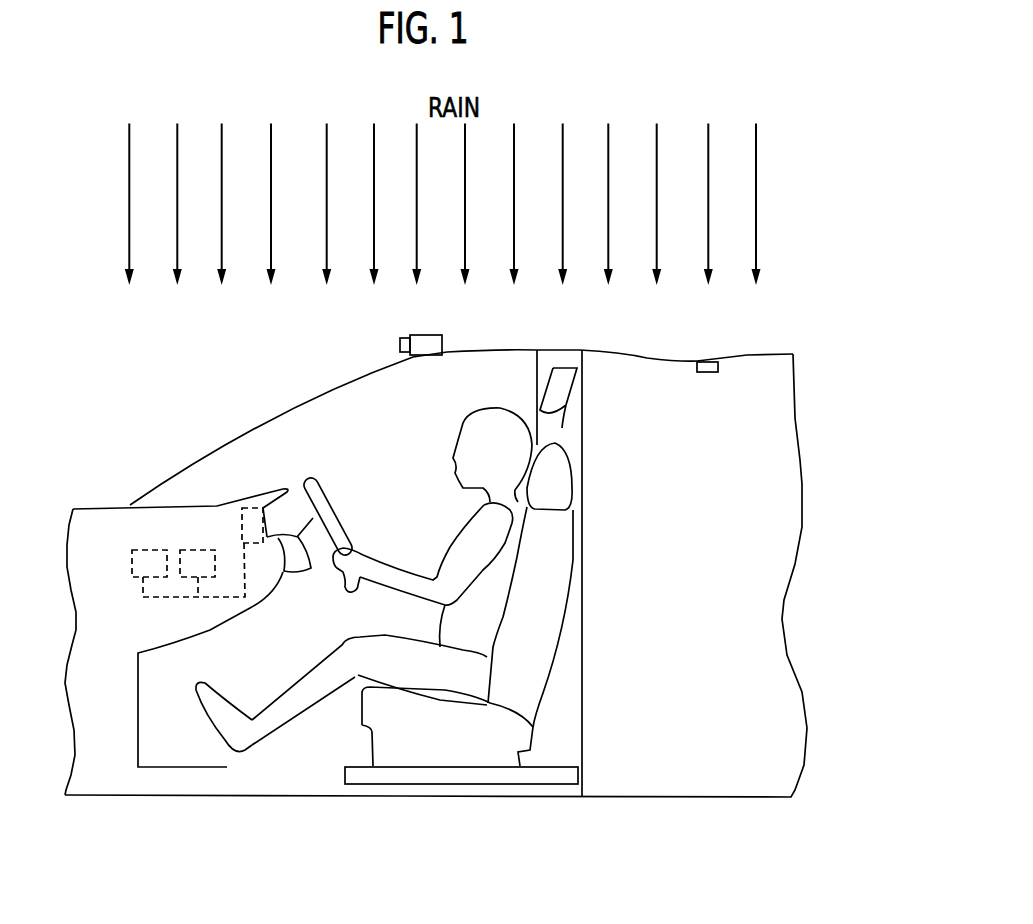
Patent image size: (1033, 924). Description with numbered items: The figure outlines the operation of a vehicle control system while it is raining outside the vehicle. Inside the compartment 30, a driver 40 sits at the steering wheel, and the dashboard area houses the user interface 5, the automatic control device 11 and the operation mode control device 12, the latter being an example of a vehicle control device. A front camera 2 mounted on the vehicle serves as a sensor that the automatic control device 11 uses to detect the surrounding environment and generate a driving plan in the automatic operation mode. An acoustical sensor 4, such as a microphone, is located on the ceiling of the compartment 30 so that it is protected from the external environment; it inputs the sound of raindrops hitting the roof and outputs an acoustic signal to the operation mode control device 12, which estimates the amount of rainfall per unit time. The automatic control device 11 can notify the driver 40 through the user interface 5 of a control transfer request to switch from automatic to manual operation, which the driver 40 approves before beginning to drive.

The front camera 2 is at (427, 343).
The acoustical sensor 4 is at (707, 360).
The user interface 5 is at (245, 507).
The automatic control device 11 is at (192, 550).
The operation mode control device 12 is at (143, 550).
The compartment 30 is at (637, 377).
The driver 40 is at (490, 418).